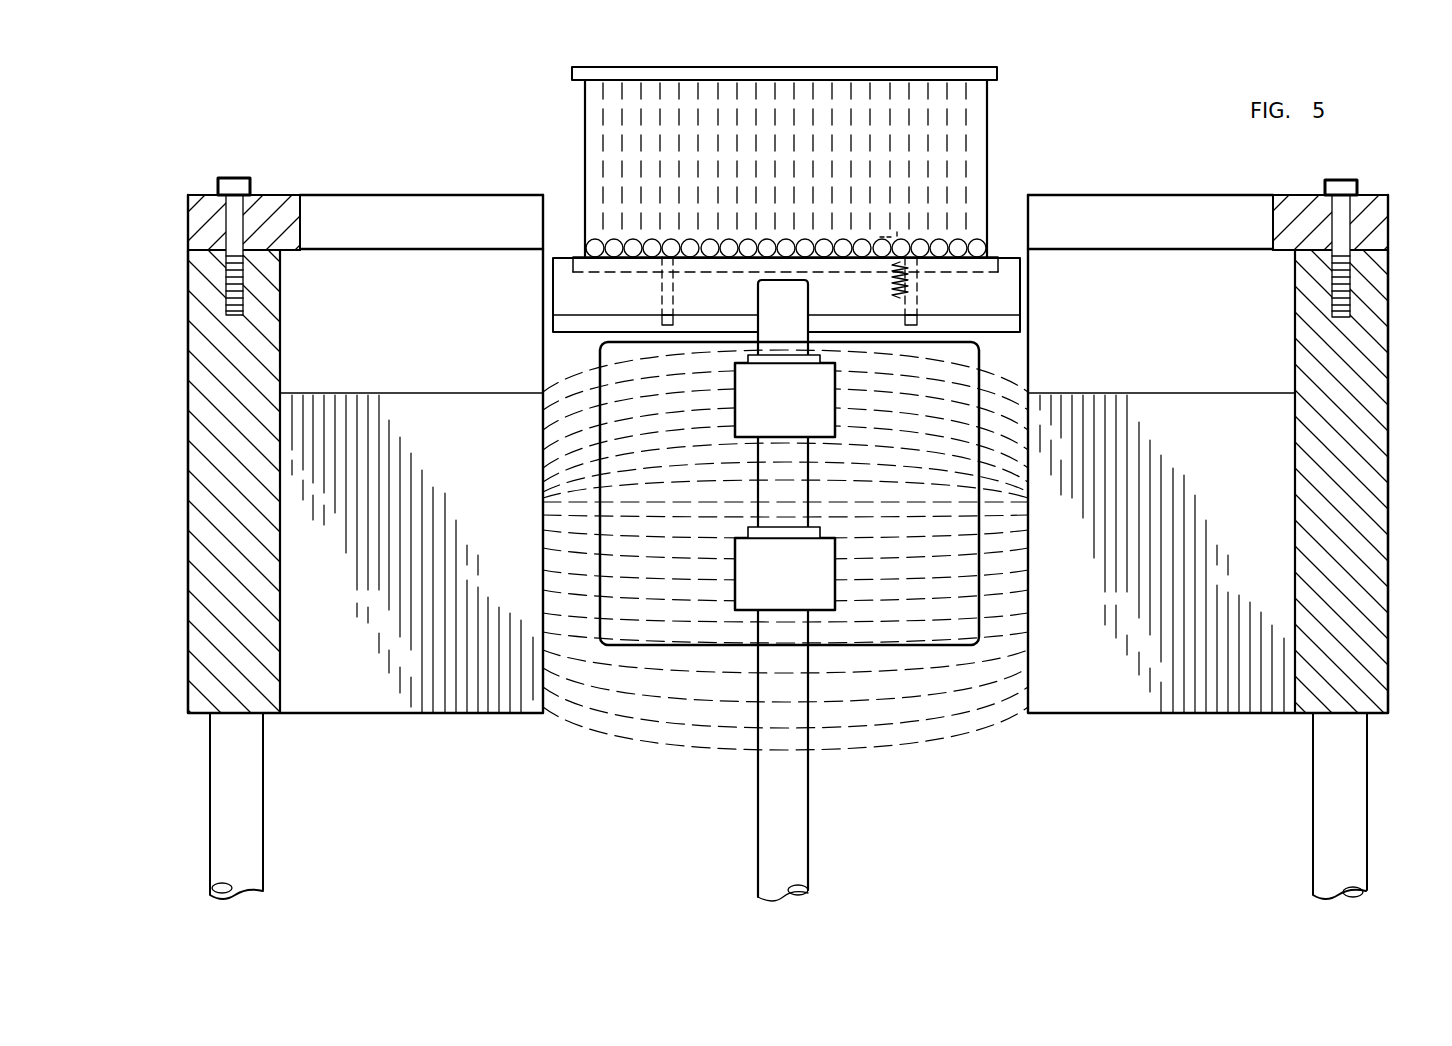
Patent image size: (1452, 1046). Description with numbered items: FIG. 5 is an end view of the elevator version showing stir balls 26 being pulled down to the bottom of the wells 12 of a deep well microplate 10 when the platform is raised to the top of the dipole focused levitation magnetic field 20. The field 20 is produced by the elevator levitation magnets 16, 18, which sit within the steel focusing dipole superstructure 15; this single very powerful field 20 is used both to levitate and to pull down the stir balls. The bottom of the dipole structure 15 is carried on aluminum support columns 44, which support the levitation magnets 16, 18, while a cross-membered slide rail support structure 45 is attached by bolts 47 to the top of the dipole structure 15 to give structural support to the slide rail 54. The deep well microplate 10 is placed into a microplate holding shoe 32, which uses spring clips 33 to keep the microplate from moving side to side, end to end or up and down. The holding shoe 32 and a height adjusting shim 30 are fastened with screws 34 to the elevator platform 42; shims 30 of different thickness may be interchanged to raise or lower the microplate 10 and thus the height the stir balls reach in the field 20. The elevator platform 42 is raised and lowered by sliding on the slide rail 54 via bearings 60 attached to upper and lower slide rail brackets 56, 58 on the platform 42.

The deep well microplate 10 is at (998, 78).
The wells 12 is at (975, 115).
The focusing dipole superstructure 15 is at (202, 464).
The elevator levitation magnet 16 is at (433, 393).
The elevator levitation magnet 18 is at (1179, 403).
The dipole focused levitation magnetic field 20 is at (998, 650).
The stir balls 26 is at (598, 238).
The height adjusting shim 30 is at (1007, 326).
The microplate holding shoe 32 is at (915, 287).
The spring clips 33 is at (901, 235).
The screws 34 is at (1038, 268).
The elevator platform 42 is at (985, 372).
The aluminum support columns 44 is at (222, 804).
The cross-membered slide rail support structure 45 is at (365, 195).
The bolts 47 is at (232, 178).
The slide rail 54 is at (810, 840).
The upper slide rail bracket 56 is at (835, 393).
The lower slide rail bracket 58 is at (835, 567).
The bearings 60 is at (818, 360).